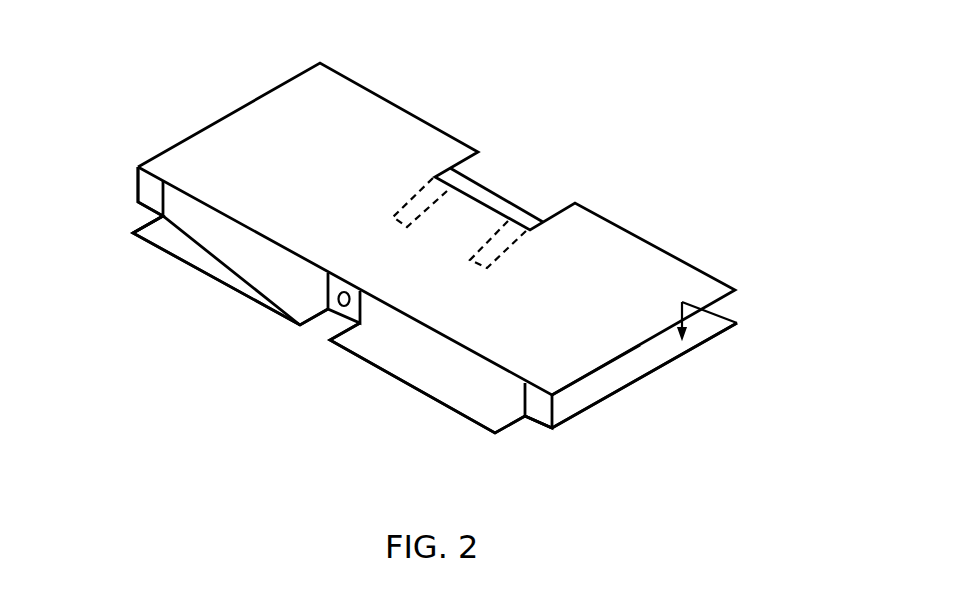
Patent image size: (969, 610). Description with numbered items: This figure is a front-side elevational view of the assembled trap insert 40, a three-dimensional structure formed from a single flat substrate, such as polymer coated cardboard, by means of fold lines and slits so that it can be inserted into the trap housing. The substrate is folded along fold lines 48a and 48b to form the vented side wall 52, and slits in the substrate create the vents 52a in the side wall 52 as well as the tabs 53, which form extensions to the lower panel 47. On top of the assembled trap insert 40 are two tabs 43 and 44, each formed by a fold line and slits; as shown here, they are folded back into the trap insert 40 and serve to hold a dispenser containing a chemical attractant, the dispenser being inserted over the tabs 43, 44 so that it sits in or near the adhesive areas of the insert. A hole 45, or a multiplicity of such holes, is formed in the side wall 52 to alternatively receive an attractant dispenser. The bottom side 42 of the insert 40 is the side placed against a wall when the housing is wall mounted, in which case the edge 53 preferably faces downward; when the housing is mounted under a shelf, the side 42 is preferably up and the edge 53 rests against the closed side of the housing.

The trap insert 40 is at (339, 424).
The bottom side 42 is at (655, 390).
The tab 43 is at (530, 244).
The tab 44 is at (416, 177).
The hole 45 is at (327, 316).
The lower panel 47 is at (722, 332).
The fold line 48a is at (570, 345).
The fold line 48b is at (535, 436).
The vented side wall 52 is at (127, 178).
The vents 52a is at (203, 240).
The tabs 53 is at (267, 319).